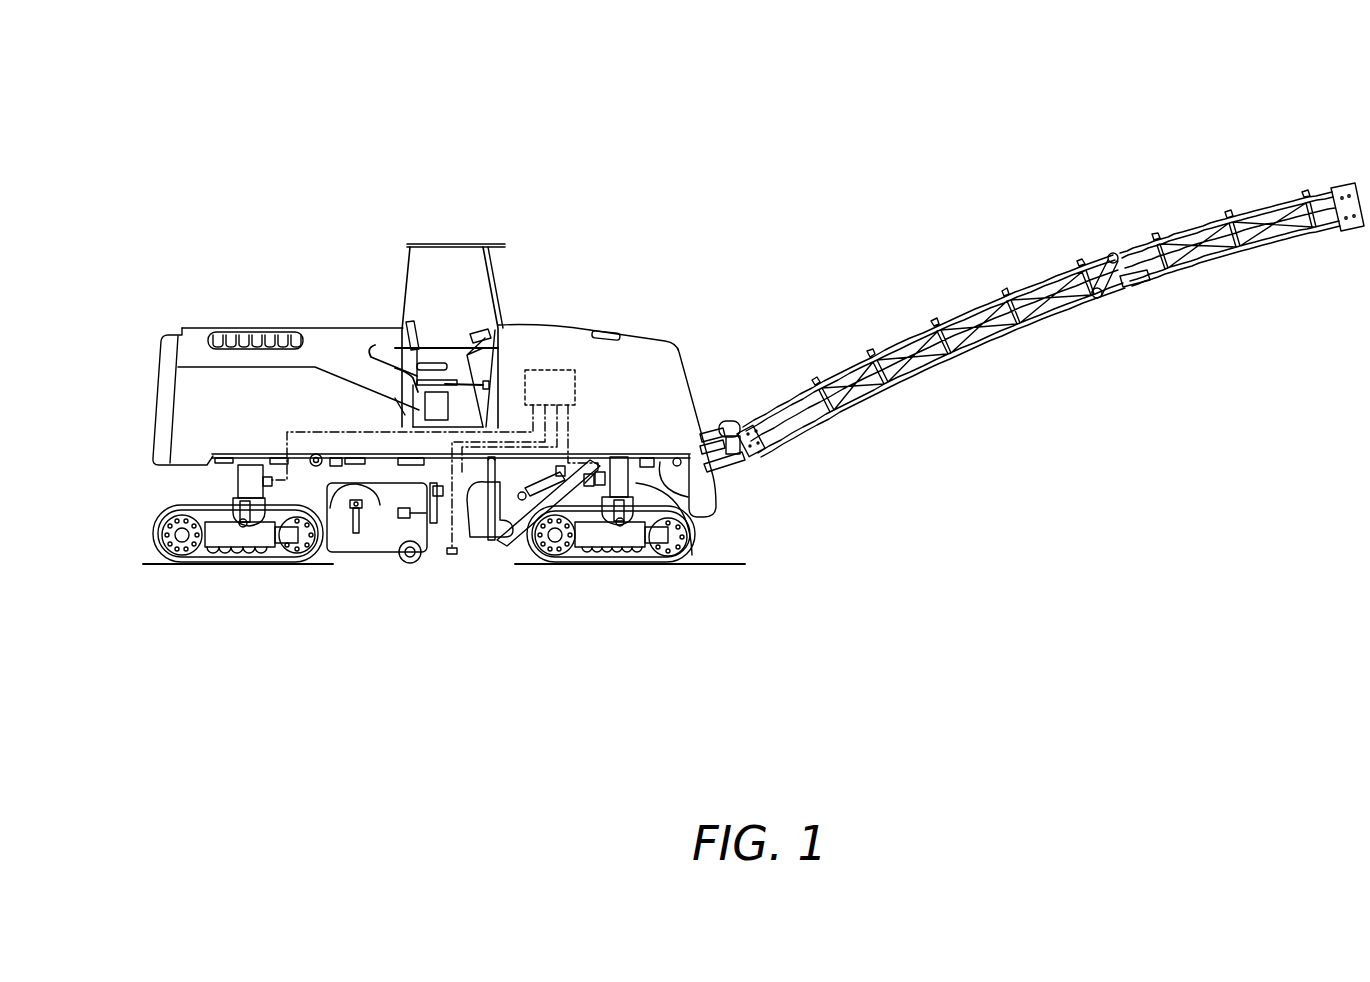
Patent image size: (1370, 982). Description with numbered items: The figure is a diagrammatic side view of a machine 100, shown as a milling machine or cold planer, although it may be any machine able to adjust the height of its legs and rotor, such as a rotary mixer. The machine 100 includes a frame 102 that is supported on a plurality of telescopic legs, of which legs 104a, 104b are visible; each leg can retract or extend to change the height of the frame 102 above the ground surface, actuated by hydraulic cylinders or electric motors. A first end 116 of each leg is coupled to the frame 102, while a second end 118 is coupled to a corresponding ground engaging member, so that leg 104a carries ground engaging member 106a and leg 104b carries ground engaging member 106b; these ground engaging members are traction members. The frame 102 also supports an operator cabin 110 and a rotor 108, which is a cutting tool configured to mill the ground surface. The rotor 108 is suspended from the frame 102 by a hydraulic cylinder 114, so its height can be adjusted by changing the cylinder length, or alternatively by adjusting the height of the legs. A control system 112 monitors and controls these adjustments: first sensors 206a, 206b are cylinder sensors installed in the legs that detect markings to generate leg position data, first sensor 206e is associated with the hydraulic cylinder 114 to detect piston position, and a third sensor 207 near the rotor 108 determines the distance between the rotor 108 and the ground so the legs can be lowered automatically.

The machine 100 is at (934, 114).
The frame 102 is at (714, 487).
The leg 104a is at (238, 474).
The leg 104b is at (645, 505).
The ground engaging member 106a is at (250, 565).
The ground engaging member 106b is at (620, 563).
The rotor 108 is at (437, 540).
The operator cabin 110 is at (497, 290).
The control system 112 is at (565, 397).
The hydraulic cylinder 114 is at (378, 525).
The first end 116 is at (624, 440).
The second end 118 is at (672, 561).
The first sensor 206a is at (267, 477).
The first sensor 206b is at (599, 472).
The first sensor 206e is at (472, 538).
The third sensor 207 is at (452, 560).